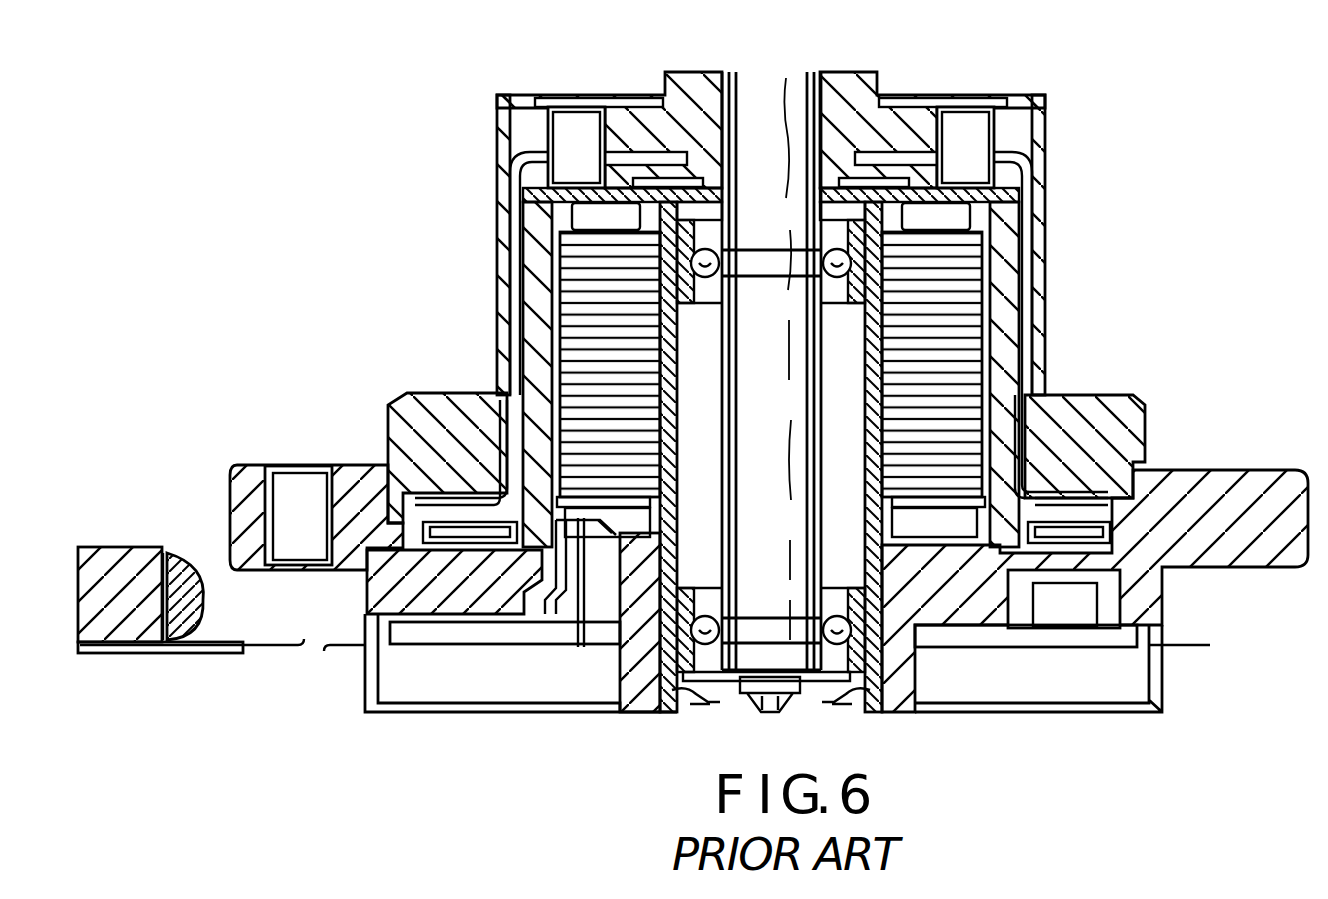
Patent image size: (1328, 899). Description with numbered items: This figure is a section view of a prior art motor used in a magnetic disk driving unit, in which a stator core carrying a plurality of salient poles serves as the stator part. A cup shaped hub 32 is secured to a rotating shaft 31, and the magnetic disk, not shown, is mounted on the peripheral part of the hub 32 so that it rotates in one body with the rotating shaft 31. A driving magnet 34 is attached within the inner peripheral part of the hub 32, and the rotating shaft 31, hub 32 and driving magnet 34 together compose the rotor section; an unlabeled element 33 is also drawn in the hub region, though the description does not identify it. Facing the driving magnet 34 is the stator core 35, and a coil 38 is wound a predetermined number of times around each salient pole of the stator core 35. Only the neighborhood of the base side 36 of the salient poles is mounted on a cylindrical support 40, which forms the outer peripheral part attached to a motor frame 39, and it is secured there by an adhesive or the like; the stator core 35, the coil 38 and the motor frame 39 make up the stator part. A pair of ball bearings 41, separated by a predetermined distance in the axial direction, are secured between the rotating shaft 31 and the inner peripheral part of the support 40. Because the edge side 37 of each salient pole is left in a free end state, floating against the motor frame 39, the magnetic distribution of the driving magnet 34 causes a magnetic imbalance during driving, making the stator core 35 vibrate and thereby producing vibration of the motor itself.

The rotating shaft 31 is at (776, 130).
The hub 32 is at (1037, 134).
The bracket 33 is at (920, 95).
The driving magnet 34 is at (1000, 290).
The stator core 35 is at (945, 389).
The base side 36 is at (880, 352).
The edge side 37 is at (990, 402).
The coil 38 is at (945, 525).
The motor frame 39 is at (1183, 470).
The cylindrical support 40 is at (872, 417).
The ball bearings 41 is at (838, 240).